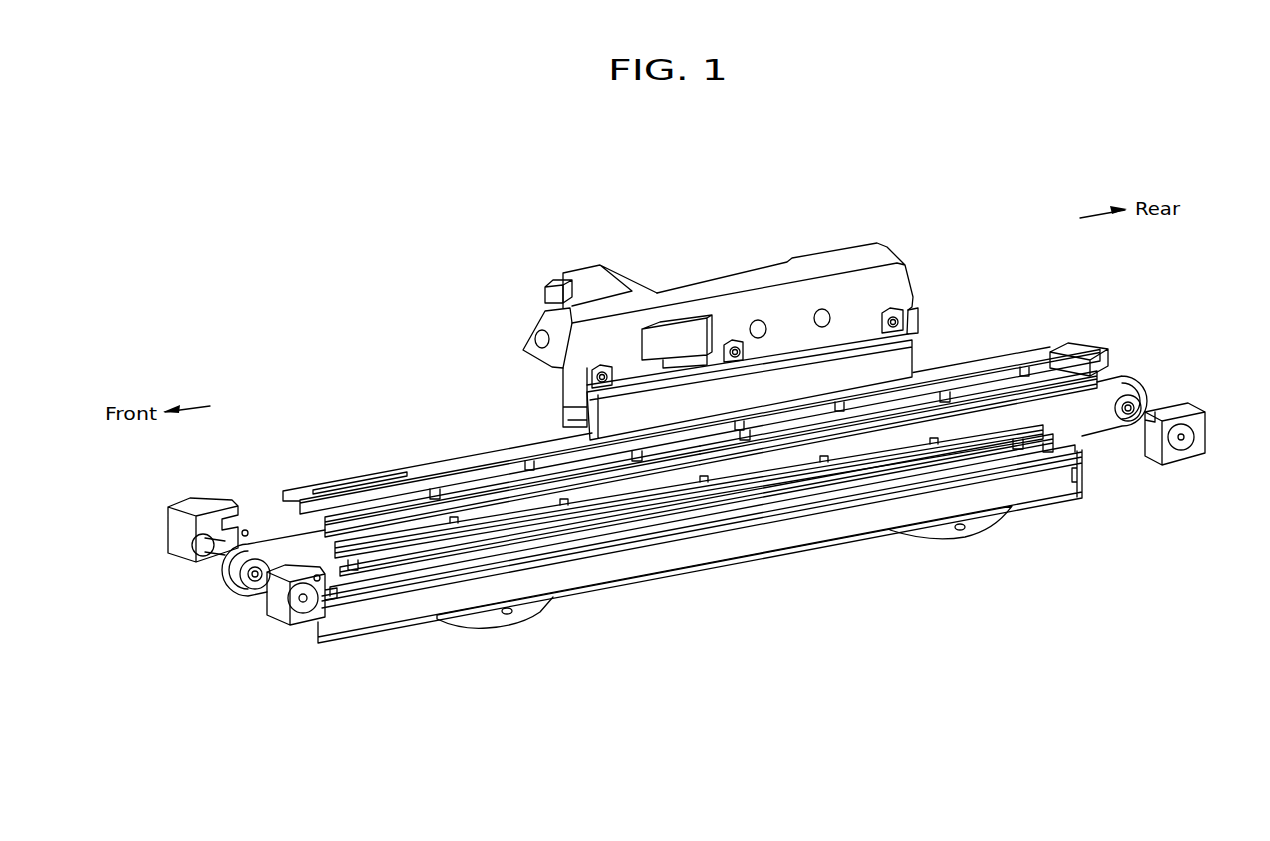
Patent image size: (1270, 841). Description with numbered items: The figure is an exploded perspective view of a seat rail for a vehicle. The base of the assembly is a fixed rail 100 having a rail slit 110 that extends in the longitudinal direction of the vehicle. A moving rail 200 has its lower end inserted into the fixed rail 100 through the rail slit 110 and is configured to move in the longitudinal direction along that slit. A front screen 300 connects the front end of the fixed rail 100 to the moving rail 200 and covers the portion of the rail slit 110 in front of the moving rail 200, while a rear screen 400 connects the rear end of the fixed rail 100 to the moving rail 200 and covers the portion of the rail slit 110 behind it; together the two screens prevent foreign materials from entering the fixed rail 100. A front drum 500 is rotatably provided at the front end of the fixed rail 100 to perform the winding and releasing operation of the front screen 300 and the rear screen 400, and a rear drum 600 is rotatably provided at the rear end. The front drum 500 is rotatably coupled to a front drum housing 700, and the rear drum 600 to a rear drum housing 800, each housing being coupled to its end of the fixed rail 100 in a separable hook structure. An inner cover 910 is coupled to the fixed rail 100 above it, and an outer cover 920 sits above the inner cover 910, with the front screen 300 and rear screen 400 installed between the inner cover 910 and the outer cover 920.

The fixed rail 100 is at (685, 548).
The rail slit 110 is at (587, 537).
The moving rail 200 is at (737, 290).
The front screen 300 is at (380, 513).
The rear screen 400 is at (980, 407).
The front drum 500 is at (260, 551).
The rear drum 600 is at (1133, 420).
The front drum housing 700 is at (273, 603).
The rear drum housing 800 is at (1097, 343).
The inner cover 910 is at (777, 458).
The outer cover 920 is at (470, 455).